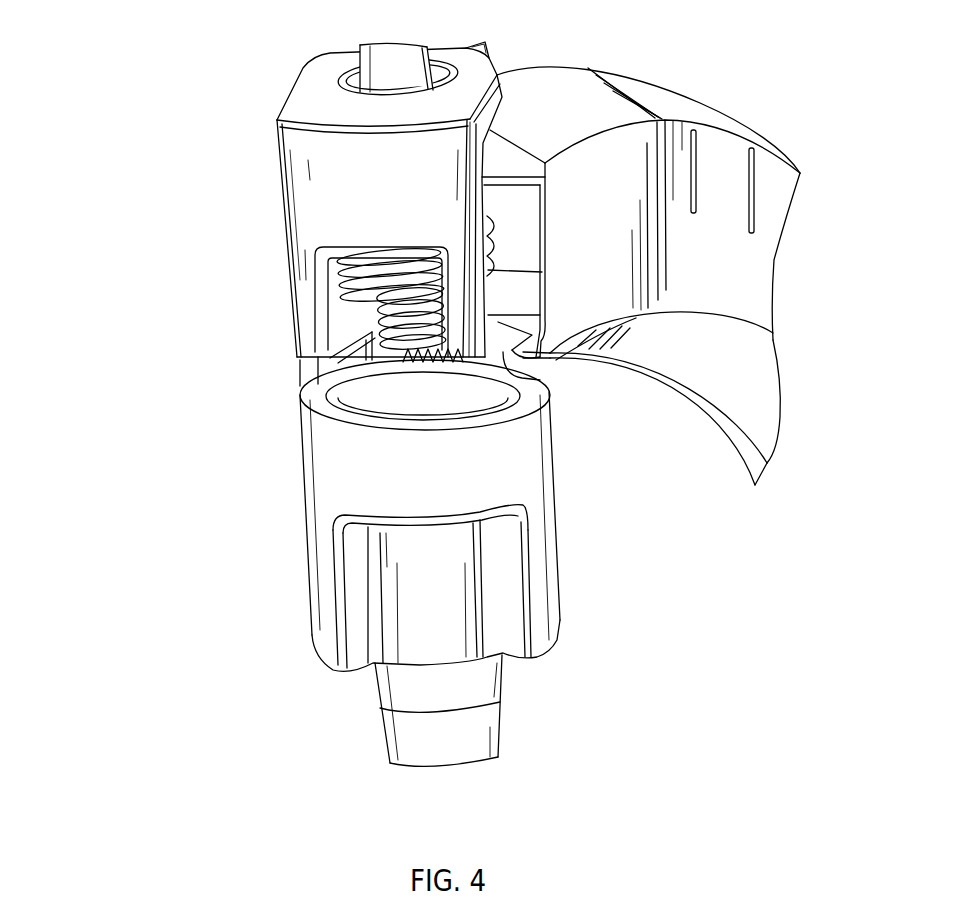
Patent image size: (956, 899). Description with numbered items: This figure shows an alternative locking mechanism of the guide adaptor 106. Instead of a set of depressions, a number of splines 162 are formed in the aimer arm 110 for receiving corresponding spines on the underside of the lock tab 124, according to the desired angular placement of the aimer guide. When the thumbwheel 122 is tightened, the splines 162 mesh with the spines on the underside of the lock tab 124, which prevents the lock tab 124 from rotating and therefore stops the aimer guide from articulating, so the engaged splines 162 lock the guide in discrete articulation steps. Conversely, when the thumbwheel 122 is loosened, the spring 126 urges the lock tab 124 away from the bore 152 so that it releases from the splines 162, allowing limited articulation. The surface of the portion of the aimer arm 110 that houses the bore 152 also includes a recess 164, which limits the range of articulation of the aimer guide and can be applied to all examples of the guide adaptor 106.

The guide adaptor 106 is at (127, 252).
The aimer arm 110 is at (778, 172).
The thumbwheel 122 is at (385, 65).
The lock tab 124 is at (298, 162).
The spring 126 is at (368, 250).
The bore 152 is at (483, 400).
The splines 162 is at (298, 403).
The recess 164 is at (407, 603).